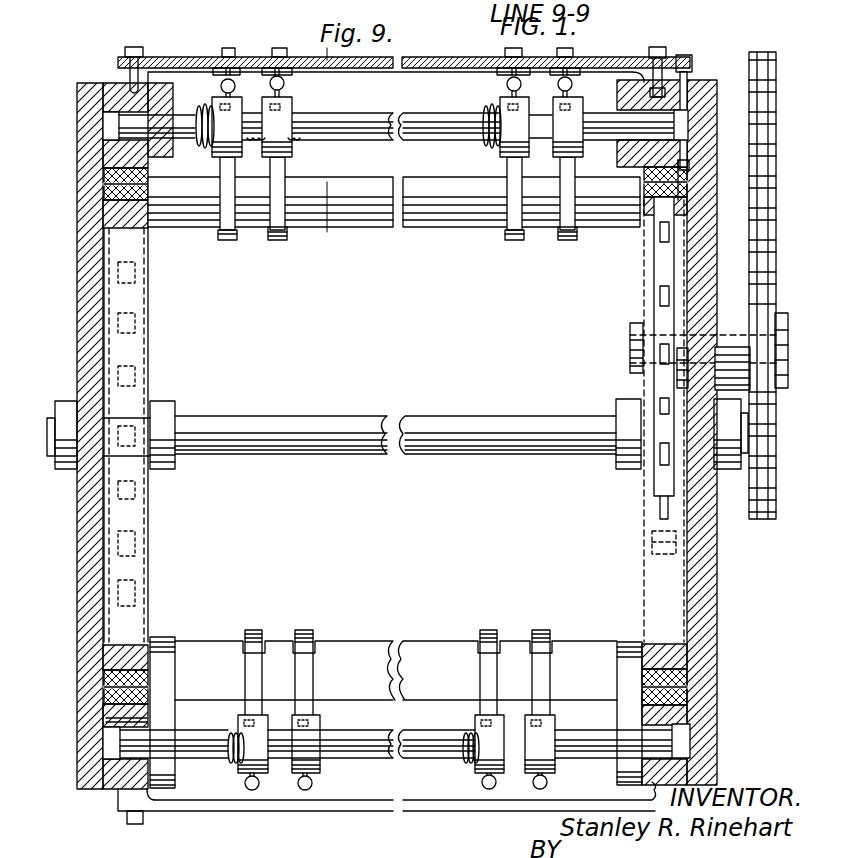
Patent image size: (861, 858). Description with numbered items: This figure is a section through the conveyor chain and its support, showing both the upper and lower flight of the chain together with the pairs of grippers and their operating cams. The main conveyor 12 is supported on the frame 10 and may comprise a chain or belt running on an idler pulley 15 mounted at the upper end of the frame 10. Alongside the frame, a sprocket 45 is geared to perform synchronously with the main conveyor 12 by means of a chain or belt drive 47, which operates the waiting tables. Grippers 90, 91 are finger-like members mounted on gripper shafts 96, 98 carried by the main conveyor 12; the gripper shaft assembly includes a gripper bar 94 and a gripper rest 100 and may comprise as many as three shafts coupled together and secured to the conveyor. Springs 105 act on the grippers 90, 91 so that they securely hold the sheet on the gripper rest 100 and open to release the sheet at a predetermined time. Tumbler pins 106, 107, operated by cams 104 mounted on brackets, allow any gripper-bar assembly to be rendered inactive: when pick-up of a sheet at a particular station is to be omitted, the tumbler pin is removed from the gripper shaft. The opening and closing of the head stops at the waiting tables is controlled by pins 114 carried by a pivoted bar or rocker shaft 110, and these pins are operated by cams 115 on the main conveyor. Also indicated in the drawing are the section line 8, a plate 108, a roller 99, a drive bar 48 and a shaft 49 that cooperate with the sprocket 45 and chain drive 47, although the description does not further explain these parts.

The section line 8- 8 is at (300, 46).
The frame 10 is at (86, 532).
The main conveyor 12 is at (104, 195).
The idler pulley 15 is at (110, 330).
The sprocket 45 is at (760, 458).
The chain or belt drive 47 is at (778, 64).
The drive bar 48 is at (656, 270).
The sprocket shaft 49 is at (700, 345).
The gripper 90 is at (280, 242).
The gripper 91 is at (226, 242).
The gripper bar 94 is at (350, 660).
The gripper shaft 96 is at (360, 750).
The gripper shaft 98 is at (340, 128).
The roller 99 is at (657, 70).
The gripper rest 100 is at (470, 216).
The cam 104 is at (292, 72).
The spring 105 is at (198, 112).
The tumbler pin 106 is at (286, 100).
The tumbler pin 107 is at (233, 80).
The plate 108 is at (315, 64).
The pivoted bar or rocker shaft 110 is at (686, 55).
The pin 114 is at (684, 127).
The cam 115 is at (686, 165).